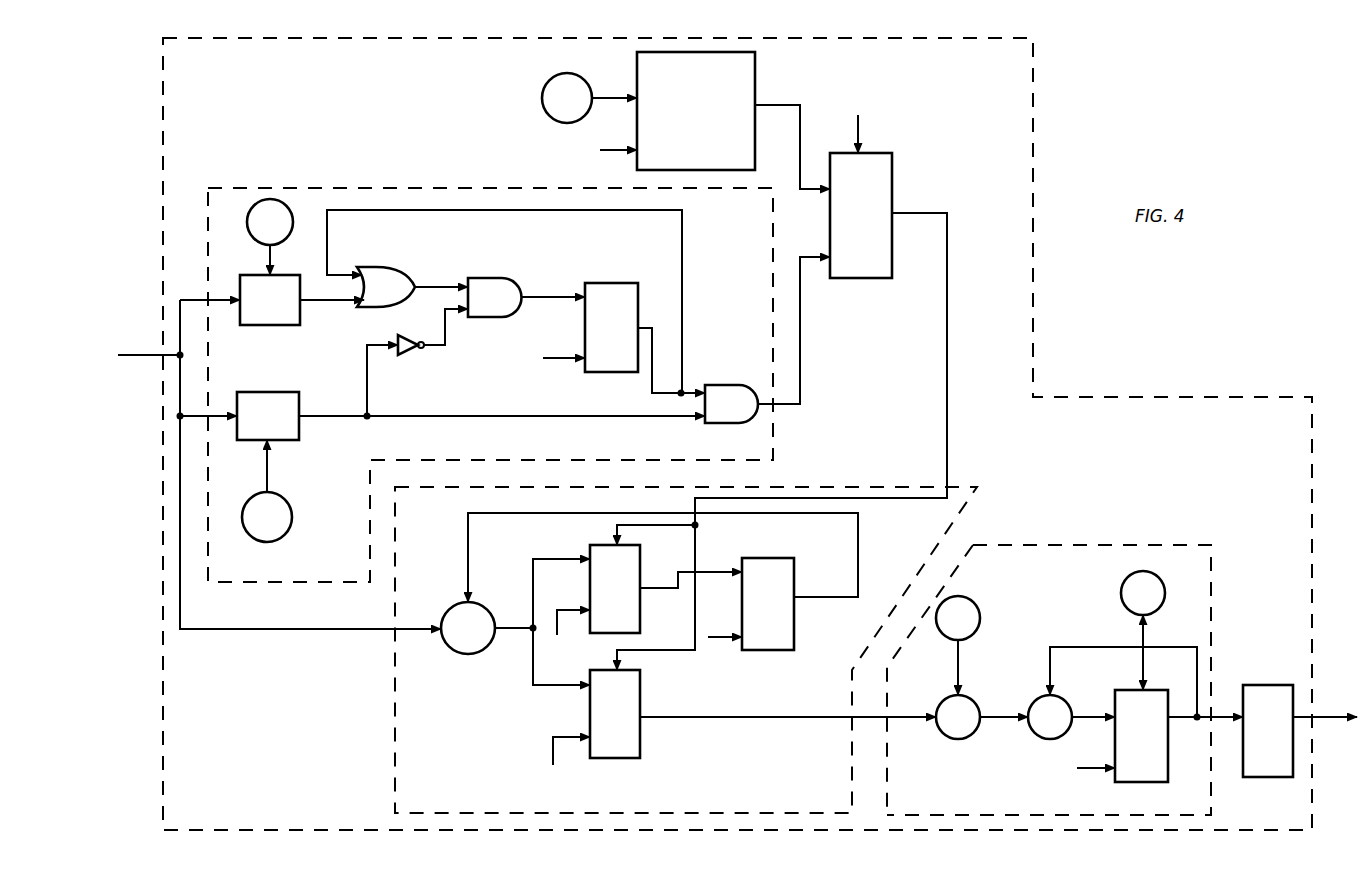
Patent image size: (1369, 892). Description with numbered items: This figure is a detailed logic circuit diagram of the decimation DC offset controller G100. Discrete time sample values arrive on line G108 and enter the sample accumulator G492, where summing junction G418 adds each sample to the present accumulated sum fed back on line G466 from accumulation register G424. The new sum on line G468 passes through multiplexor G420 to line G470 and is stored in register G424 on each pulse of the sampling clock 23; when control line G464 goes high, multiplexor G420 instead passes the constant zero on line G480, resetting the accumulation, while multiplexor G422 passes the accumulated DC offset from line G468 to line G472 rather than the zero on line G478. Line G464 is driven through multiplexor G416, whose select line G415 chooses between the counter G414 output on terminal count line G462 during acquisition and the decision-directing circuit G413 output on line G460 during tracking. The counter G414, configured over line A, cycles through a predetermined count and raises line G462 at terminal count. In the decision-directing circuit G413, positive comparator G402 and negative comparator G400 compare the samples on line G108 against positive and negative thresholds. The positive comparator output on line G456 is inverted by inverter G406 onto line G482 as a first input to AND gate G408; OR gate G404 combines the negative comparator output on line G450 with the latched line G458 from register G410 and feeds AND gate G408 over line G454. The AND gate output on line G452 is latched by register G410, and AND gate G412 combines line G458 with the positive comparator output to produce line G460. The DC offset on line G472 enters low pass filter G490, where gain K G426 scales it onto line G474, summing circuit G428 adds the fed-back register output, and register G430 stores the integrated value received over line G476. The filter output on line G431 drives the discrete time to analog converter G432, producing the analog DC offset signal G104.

The decimation DC offset controller G100 is at (236, 70).
The decision-directing circuit G413 is at (336, 186).
The sample accumulator G492 is at (960, 525).
The low pass filter G490 is at (1112, 545).
The line G108 is at (150, 357).
The negative comparator G400 is at (286, 327).
The positive comparator G402 is at (272, 392).
The line G456 is at (337, 418).
The inverter G406 is at (410, 356).
The line G482 is at (446, 334).
The OR gate G404 is at (384, 268).
The line G450 is at (338, 302).
The line G454 is at (442, 287).
The AND gate G408 is at (521, 314).
The line G452 is at (532, 297).
The register G410 is at (608, 283).
The sampling clock 23 is at (555, 359).
The line G458 is at (652, 392).
The AND gate G412 is at (723, 385).
The output line G460 is at (800, 344).
The counter G414 is at (755, 86).
The line G462 is at (800, 109).
The line G415 is at (860, 125).
The multiplexor G416 is at (892, 177).
The line G464 is at (947, 362).
The summing junction G418 is at (456, 652).
The line G466 is at (858, 556).
The line G468 is at (533, 684).
The line G480 is at (557, 610).
The multiplexor G420 is at (640, 613).
The line G470 is at (655, 588).
The multiplexor G422 is at (640, 705).
The line G478 is at (553, 753).
The line G472 is at (768, 718).
The accumulation register G424 is at (794, 638).
The gain K G426 is at (948, 739).
The line G474 is at (990, 717).
The summing circuit G428 is at (1045, 740).
The line G476 is at (1090, 717).
The register G430 is at (1142, 782).
The line G431 is at (1228, 719).
The discrete time to analog converter G432 is at (1265, 685).
The analog DC offset signal G104 is at (1340, 719).